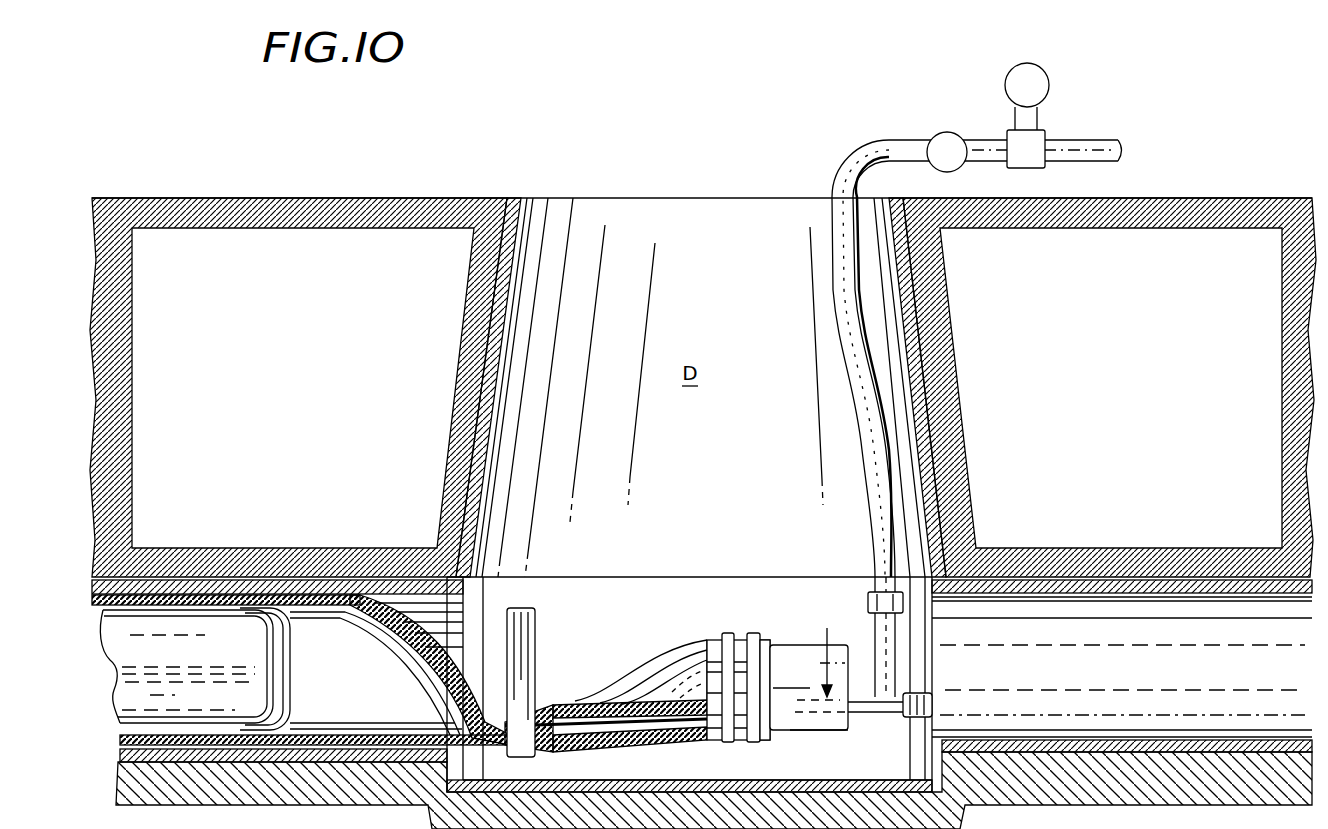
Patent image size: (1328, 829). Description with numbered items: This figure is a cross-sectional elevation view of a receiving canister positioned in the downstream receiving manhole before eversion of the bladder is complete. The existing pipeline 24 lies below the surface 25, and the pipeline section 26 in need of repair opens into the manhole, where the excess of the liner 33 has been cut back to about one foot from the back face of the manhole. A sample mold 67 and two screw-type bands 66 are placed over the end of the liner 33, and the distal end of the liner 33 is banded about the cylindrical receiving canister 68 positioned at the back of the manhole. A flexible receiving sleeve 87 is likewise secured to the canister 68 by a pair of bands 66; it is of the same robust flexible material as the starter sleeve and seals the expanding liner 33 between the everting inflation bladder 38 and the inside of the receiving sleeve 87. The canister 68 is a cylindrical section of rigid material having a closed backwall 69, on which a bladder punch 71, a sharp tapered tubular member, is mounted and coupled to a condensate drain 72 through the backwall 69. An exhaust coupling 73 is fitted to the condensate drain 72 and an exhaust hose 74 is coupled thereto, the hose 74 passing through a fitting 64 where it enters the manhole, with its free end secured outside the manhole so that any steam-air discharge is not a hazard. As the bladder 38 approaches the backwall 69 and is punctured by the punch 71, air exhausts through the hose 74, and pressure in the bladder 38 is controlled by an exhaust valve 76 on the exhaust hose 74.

The existing pipeline 24 is at (1048, 578).
The surface 25 is at (414, 190).
The pipeline section 26 is at (182, 597).
The liner 33 is at (305, 597).
The inflation bladder 38 is at (222, 635).
The hose coupling 64 is at (868, 600).
The screw-type bands 66 is at (750, 633).
The sample mold 67 is at (537, 612).
The receiving canister 68 is at (803, 650).
The backwall 69 is at (824, 646).
The bladder punch 71 is at (809, 730).
The condensate drain 72 is at (932, 706).
The exhaust coupling 73 is at (893, 650).
The exhaust hose 74 is at (857, 172).
The exhaust valve 76 is at (946, 130).
The flexible receiving sleeve 87 is at (686, 638).